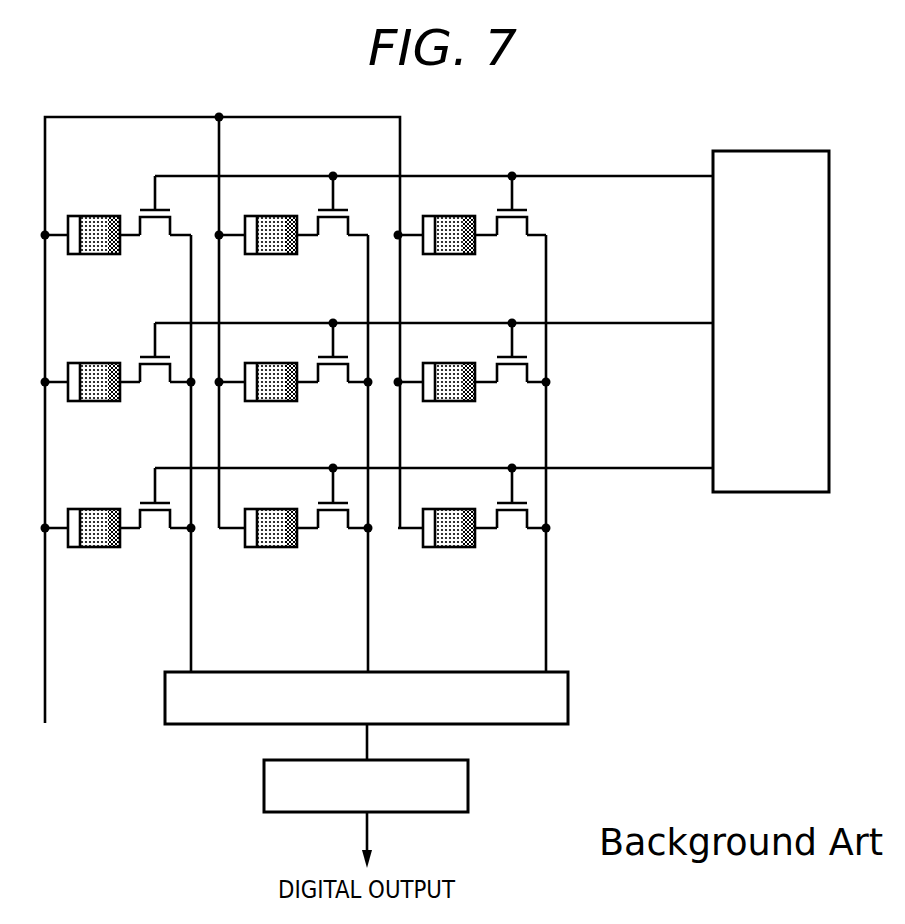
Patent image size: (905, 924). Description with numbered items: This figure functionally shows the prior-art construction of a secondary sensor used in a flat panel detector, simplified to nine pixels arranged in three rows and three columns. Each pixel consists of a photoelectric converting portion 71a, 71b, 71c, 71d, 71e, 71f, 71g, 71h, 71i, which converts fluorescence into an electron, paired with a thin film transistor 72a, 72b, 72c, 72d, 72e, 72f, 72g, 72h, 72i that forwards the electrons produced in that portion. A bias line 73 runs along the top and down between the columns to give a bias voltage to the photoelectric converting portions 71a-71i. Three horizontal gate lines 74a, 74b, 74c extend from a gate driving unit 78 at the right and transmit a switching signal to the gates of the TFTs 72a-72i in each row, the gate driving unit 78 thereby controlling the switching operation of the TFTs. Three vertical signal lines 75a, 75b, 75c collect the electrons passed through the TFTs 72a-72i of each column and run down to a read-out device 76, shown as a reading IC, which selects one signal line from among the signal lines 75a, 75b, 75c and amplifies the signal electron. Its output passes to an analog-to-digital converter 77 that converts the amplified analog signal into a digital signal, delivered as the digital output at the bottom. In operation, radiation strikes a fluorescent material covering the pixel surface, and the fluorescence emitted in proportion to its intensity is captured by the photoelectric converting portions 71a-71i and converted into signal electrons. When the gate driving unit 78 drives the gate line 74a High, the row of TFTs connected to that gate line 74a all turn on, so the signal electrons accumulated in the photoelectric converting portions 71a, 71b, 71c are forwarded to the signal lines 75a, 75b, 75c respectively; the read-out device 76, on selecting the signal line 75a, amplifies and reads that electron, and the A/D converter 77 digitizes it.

The photoelectric converting portion 71a is at (94, 256).
The photoelectric converting portion 71b is at (271, 256).
The photoelectric converting portion 71c is at (449, 256).
The photoelectric converting portion 71d is at (94, 403).
The photoelectric converting portion 71e is at (271, 403).
The photoelectric converting portion 71f is at (449, 403).
The photoelectric converting portion 71g is at (94, 549).
The photoelectric converting portion 71h is at (271, 549).
The photoelectric converting portion 71i is at (449, 549).
The thin film transistor 72a is at (156, 250).
The thin film transistor 72b is at (334, 250).
The thin film transistor 72c is at (513, 250).
The thin film transistor 72d is at (156, 397).
The thin film transistor 72e is at (334, 397).
The thin film transistor 72f is at (513, 397).
The thin film transistor 72g is at (156, 543).
The thin film transistor 72h is at (334, 543).
The thin film transistor 72i is at (513, 543).
The bias line 73 is at (45, 650).
The gate line 74a is at (622, 174).
The gate line 74b is at (622, 321).
The gate line 74c is at (618, 466).
The signal line 75a is at (191, 650).
The signal line 75b is at (368, 650).
The signal line 75c is at (546, 650).
The read-out device 76 is at (569, 697).
The analog-to-digital converter 77 is at (470, 782).
The gate driving unit 78 is at (785, 150).